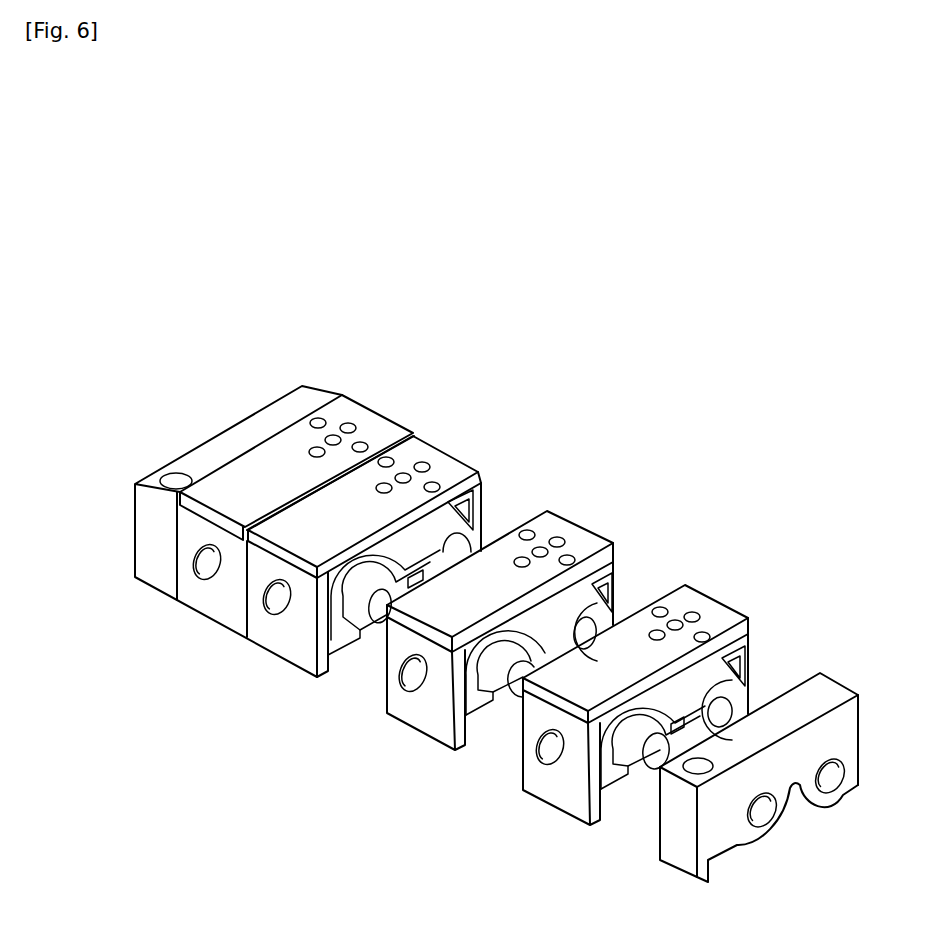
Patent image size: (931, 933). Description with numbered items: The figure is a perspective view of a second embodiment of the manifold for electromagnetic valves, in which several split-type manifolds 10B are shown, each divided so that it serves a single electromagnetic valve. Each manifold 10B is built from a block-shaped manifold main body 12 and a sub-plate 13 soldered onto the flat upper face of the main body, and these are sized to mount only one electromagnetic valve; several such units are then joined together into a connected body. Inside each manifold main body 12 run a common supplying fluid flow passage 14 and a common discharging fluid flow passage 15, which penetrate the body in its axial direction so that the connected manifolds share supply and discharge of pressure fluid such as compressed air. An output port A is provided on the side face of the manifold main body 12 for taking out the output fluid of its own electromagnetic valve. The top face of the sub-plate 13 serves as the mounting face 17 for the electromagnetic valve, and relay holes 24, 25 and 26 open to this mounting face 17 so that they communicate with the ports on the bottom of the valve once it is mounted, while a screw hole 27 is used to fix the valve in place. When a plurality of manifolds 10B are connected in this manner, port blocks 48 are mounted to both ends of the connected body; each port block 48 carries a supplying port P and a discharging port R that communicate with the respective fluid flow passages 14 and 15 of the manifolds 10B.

The manifold 10B is at (582, 495).
The manifold main body 12 is at (452, 470).
The sub-plate 13 is at (292, 640).
The common supplying fluid flow passage 14 is at (378, 618).
The common discharging fluid flow passage 15 is at (483, 530).
The mounting face 17 is at (340, 533).
The relay hole 24 is at (384, 484).
The relay hole 25 is at (404, 474).
The relay hole 26 is at (423, 464).
The screw hole 27 is at (750, 655).
The port block 48 is at (723, 823).
The output port A is at (272, 595).
The supplying port P is at (768, 814).
The discharging port R is at (837, 792).